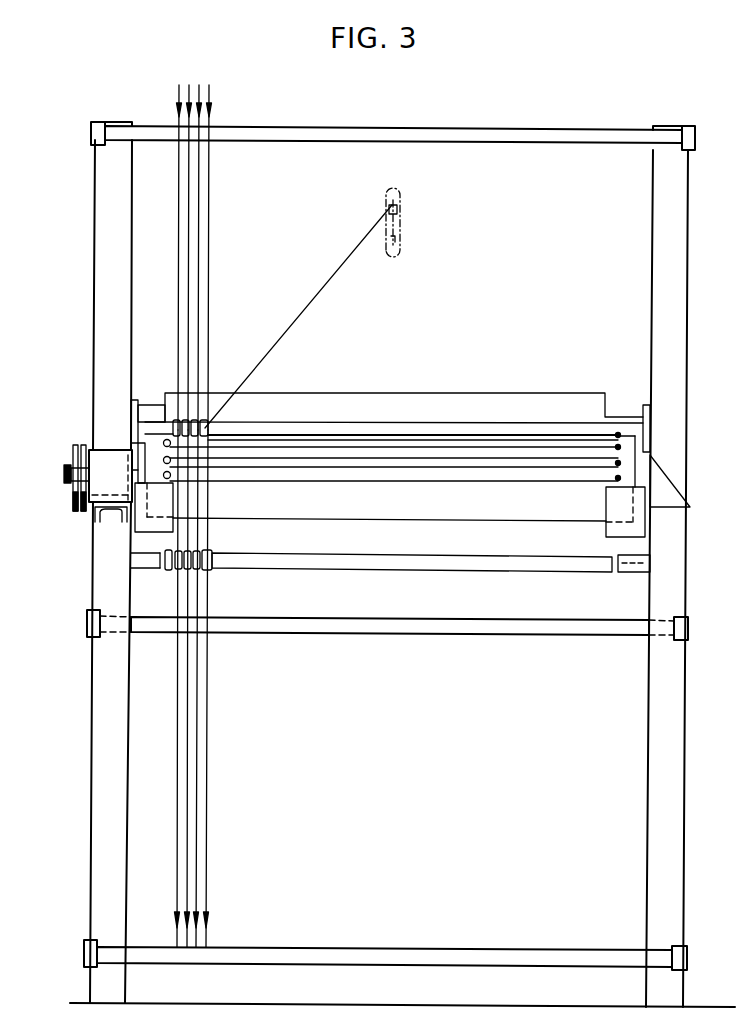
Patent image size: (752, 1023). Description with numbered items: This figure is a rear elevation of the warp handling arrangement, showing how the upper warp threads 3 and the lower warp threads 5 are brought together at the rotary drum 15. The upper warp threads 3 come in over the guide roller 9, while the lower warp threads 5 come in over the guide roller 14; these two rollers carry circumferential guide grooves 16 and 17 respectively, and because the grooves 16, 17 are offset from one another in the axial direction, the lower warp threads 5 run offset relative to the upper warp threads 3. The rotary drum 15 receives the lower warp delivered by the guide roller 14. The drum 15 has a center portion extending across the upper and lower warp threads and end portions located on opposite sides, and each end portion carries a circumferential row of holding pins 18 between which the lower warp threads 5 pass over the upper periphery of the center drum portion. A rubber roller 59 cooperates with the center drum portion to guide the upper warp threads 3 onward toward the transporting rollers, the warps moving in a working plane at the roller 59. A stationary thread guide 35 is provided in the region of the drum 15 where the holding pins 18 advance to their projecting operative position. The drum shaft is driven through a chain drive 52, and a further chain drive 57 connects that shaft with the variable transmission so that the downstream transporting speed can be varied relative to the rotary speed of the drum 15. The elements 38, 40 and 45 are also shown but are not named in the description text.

The upper warp threads 3 is at (179, 322).
The lower warp threads 5 is at (178, 861).
The guide roller 9 is at (262, 430).
The guide roller 14 is at (372, 560).
The rotary drum 15 is at (389, 507).
The circumferential guide grooves 16 is at (209, 425).
The circumferential guide grooves 17 is at (208, 550).
The holding pins 18 is at (164, 440).
The stationary thread guide 35 is at (153, 528).
The guide bars 38 is at (312, 303).
The pivot lever 40 is at (405, 234).
The pivot pin 45 is at (401, 204).
The chain drive 52 is at (70, 450).
The chain drive 57 is at (81, 440).
The rubber roller 59 is at (320, 410).